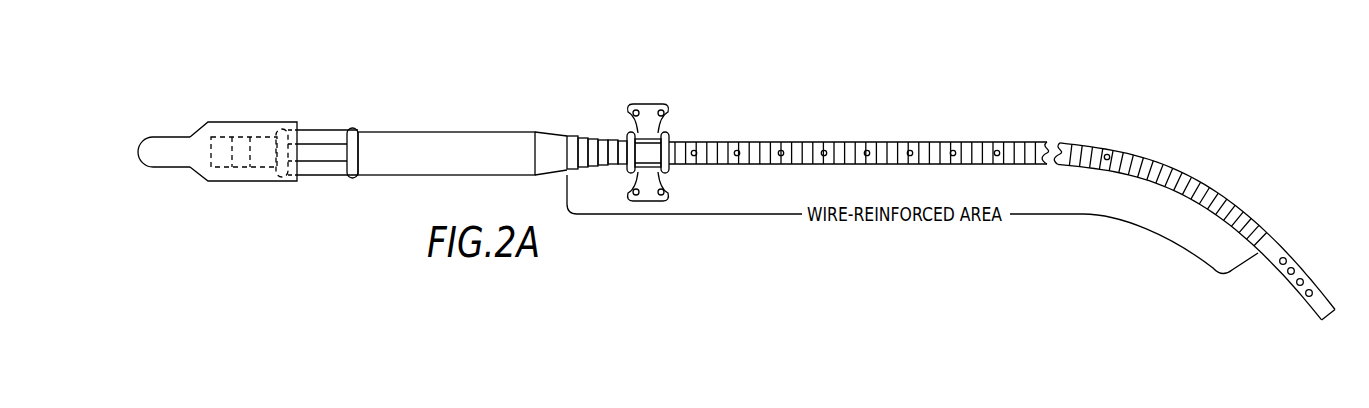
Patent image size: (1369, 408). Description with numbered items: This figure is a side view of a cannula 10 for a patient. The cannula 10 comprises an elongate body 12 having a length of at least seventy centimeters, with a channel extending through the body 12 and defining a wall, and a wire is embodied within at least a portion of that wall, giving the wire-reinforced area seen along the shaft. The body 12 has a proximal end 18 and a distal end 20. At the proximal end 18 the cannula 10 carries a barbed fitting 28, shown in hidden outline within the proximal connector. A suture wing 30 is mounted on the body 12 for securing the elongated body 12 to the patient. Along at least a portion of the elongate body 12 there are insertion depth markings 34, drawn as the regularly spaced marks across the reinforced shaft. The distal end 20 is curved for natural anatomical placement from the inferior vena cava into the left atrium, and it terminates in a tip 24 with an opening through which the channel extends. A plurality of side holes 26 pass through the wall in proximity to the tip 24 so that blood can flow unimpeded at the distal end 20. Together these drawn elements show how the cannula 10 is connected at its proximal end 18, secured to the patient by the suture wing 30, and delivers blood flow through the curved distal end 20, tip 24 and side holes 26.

The cannula 10 is at (1107, 122).
The elongate body 12 is at (944, 126).
The proximal end 18 is at (262, 104).
The distal end 20 is at (1287, 222).
The tip 24 is at (1305, 328).
The side holes 26 is at (1303, 280).
The barbed fitting 28 is at (240, 168).
The suture wing 30 is at (643, 103).
The insertion depth markings 34 is at (856, 133).